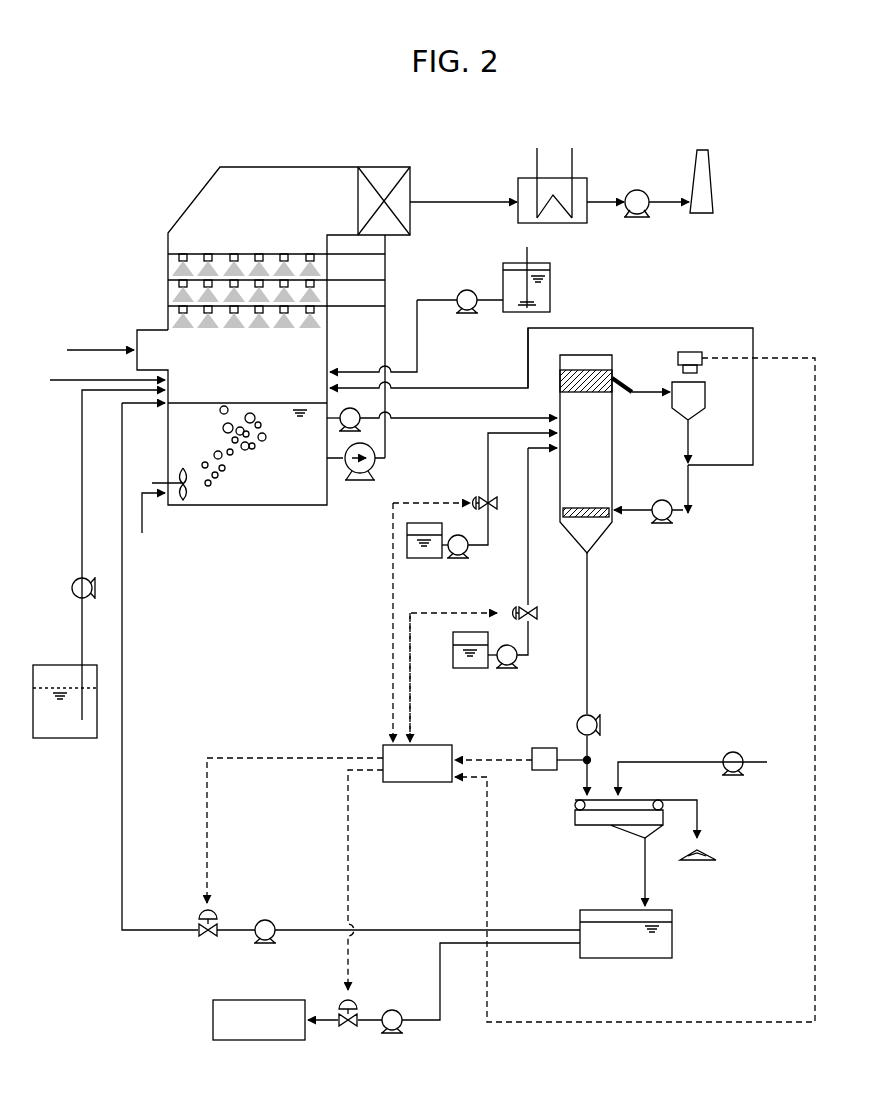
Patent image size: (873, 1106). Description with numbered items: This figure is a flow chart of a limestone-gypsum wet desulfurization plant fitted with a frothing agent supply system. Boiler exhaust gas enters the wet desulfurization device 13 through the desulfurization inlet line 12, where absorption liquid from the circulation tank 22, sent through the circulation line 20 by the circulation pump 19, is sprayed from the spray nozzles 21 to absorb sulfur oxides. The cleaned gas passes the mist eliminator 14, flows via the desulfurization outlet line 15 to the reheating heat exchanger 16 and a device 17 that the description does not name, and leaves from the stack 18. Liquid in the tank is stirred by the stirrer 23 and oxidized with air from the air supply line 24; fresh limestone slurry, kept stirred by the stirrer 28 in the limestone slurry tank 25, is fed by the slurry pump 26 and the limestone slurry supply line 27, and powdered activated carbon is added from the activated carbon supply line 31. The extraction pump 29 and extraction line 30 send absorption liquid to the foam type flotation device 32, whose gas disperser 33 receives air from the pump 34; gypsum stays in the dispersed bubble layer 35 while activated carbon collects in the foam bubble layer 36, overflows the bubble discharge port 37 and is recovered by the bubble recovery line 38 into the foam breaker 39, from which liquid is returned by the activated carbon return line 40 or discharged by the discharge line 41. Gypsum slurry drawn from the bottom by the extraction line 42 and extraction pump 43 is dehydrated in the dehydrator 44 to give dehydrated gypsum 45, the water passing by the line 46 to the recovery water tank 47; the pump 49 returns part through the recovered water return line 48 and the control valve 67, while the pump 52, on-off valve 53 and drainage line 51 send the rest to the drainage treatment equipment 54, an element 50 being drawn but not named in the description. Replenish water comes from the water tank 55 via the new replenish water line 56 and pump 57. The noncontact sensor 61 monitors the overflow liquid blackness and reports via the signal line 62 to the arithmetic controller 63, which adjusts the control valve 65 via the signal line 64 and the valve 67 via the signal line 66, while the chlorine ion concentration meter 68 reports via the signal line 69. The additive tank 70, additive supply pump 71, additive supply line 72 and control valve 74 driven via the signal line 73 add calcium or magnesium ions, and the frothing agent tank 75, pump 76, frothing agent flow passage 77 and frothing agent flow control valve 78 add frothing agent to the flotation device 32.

The desulfurization inlet line 12 is at (125, 345).
The wet desulfurization device 13 is at (190, 207).
The mist eliminator 14 is at (378, 167).
The desulfurization outlet line 15 is at (447, 200).
The heat exchanger (reheating unit) 16 is at (590, 178).
The fan 17 is at (640, 190).
The stack 18 is at (700, 215).
The desulfurization/absorption liquid circulation pump 19 is at (355, 482).
The circulation line 20 is at (392, 342).
The spray nozzles 21 is at (165, 257).
The circulation tank 22 is at (270, 505).
The stirrer 23 is at (195, 505).
The air supply line 24 is at (147, 523).
The limestone slurry tank 25 is at (550, 292).
The slurry pump 26 is at (462, 290).
The limestone slurry supply line 27 is at (420, 362).
The stirrer 28 is at (530, 250).
The extraction pump 29 is at (352, 407).
The extraction line 30 is at (418, 425).
The activated carbon supply line 31 is at (70, 384).
The foam type flotation device 32 is at (614, 491).
The gas disperser 33 is at (600, 532).
The pump 34 is at (662, 523).
The dispersed bubble layer 35 is at (600, 465).
The foam bubble layer 36 is at (552, 392).
The bubble discharge port 37 is at (618, 377).
The bubble recovery line 38 is at (640, 396).
The foam breaker 39 is at (692, 412).
The activated carbon return line 40 is at (752, 326).
The discharge line 41 is at (695, 495).
The extraction line 42 is at (589, 688).
The extraction pump 43 is at (600, 727).
The dehydrator 44 is at (575, 812).
The dehydrated gypsum 45 is at (705, 863).
The line 46 is at (642, 850).
The recovery water tank 47 is at (673, 925).
The recovered water return line 48 is at (124, 670).
The pump 49 is at (267, 945).
The wastewater tank 50 is at (212, 1020).
The drainage line 51 is at (560, 945).
The pump 52 is at (392, 1033).
The on-off valve 53 is at (697, 760).
The drainage treatment equipment 54 is at (735, 775).
The water tank 55 is at (55, 740).
The new replenish water line 56 is at (80, 630).
The pump 57 is at (72, 586).
The noncontact type sensor 61 is at (703, 362).
The signal line 62 is at (813, 697).
The arithmetic controller 63 is at (400, 783).
The signal line 64 is at (350, 878).
The control valve 65 is at (347, 1032).
The signal line 66 is at (262, 756).
The control valve 67 is at (208, 940).
The chlorine ion concentration meter 68 is at (538, 772).
The signal line 69 is at (500, 758).
The additive tank 70 is at (422, 560).
The additive supply pump 71 is at (460, 558).
The additive supply line 72 is at (490, 530).
The signal line 73 is at (391, 690).
The control valve 74 is at (470, 492).
The frothing agent tank 75 is at (456, 670).
The pump 76 is at (508, 667).
The frothing agent flow passage 77 is at (530, 640).
The frothing agent flow control valve 78 is at (536, 612).